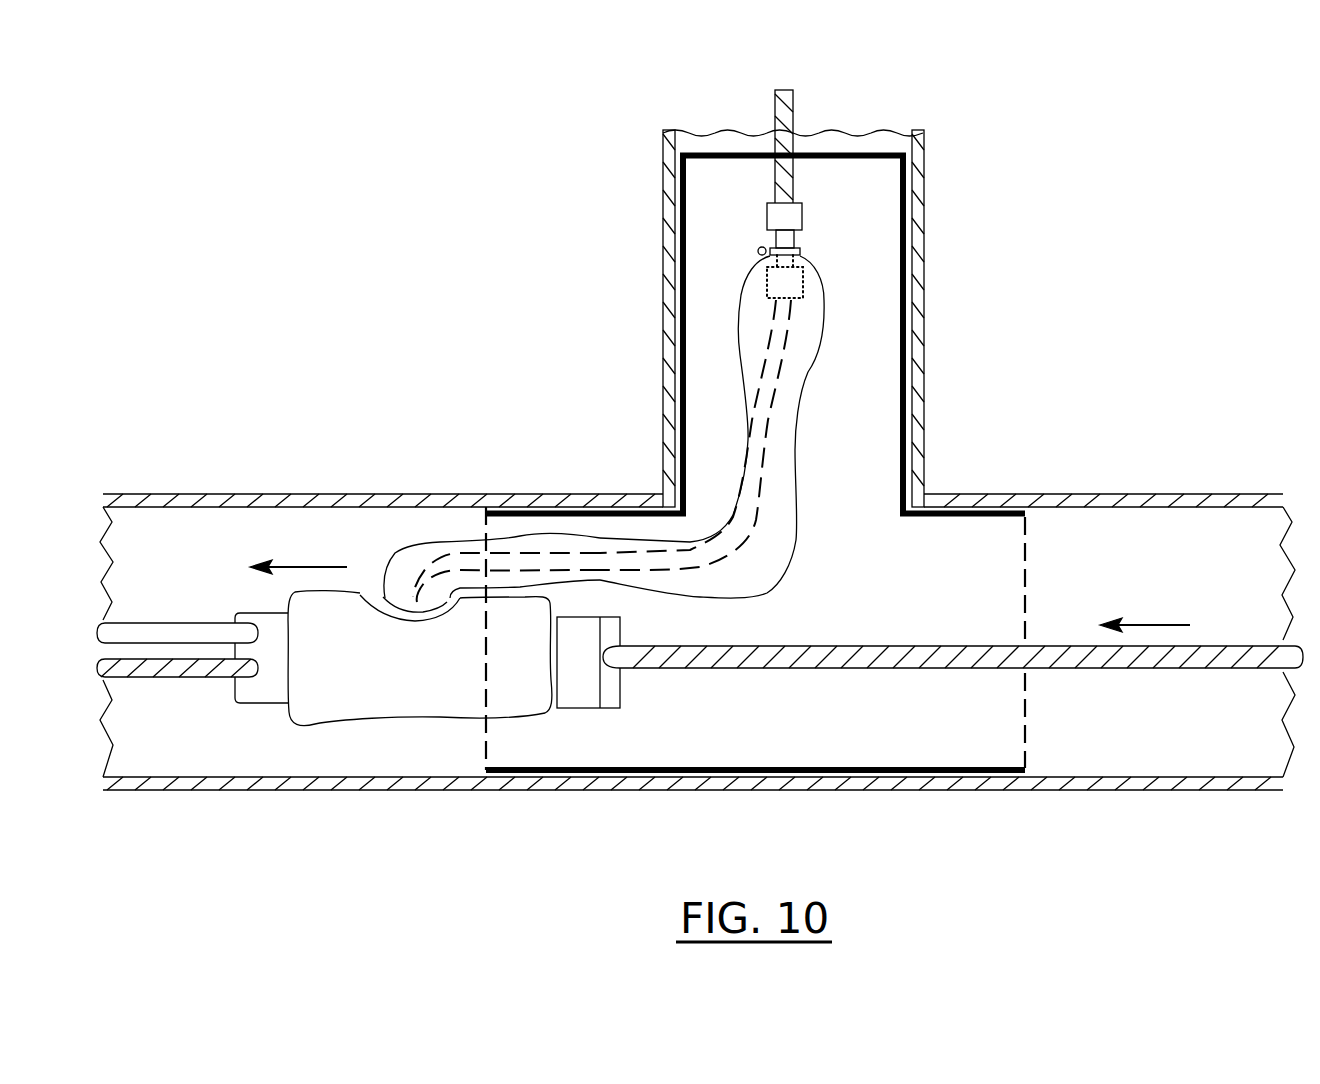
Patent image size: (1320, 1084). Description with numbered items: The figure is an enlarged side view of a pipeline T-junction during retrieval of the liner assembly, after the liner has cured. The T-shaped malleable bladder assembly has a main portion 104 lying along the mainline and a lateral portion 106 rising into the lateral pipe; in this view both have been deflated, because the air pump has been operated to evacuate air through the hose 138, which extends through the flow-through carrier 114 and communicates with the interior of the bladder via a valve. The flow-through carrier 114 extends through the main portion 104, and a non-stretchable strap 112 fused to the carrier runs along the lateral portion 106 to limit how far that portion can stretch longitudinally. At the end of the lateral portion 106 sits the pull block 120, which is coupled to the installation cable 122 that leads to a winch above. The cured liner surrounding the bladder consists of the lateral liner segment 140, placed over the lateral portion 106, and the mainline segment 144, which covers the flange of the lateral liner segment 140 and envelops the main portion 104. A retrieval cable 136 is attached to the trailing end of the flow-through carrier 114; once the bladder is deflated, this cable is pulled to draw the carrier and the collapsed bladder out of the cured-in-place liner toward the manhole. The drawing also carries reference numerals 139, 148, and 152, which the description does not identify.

The main portion 104 is at (393, 687).
The lateral portion 106 is at (808, 377).
The non-stretchable strap 112 is at (420, 563).
The flow-through carrier 114 is at (575, 695).
The pull block 120 is at (793, 245).
The installation cable 122 is at (795, 120).
The retrieval cable 136 is at (173, 677).
The hose 138 is at (197, 633).
The inlet rod 139 is at (1168, 662).
The lateral liner segment 140 is at (667, 217).
The mainline segment 144 is at (988, 512).
The downstream duct wall 148 is at (1172, 497).
The right riser wall 152 is at (927, 232).